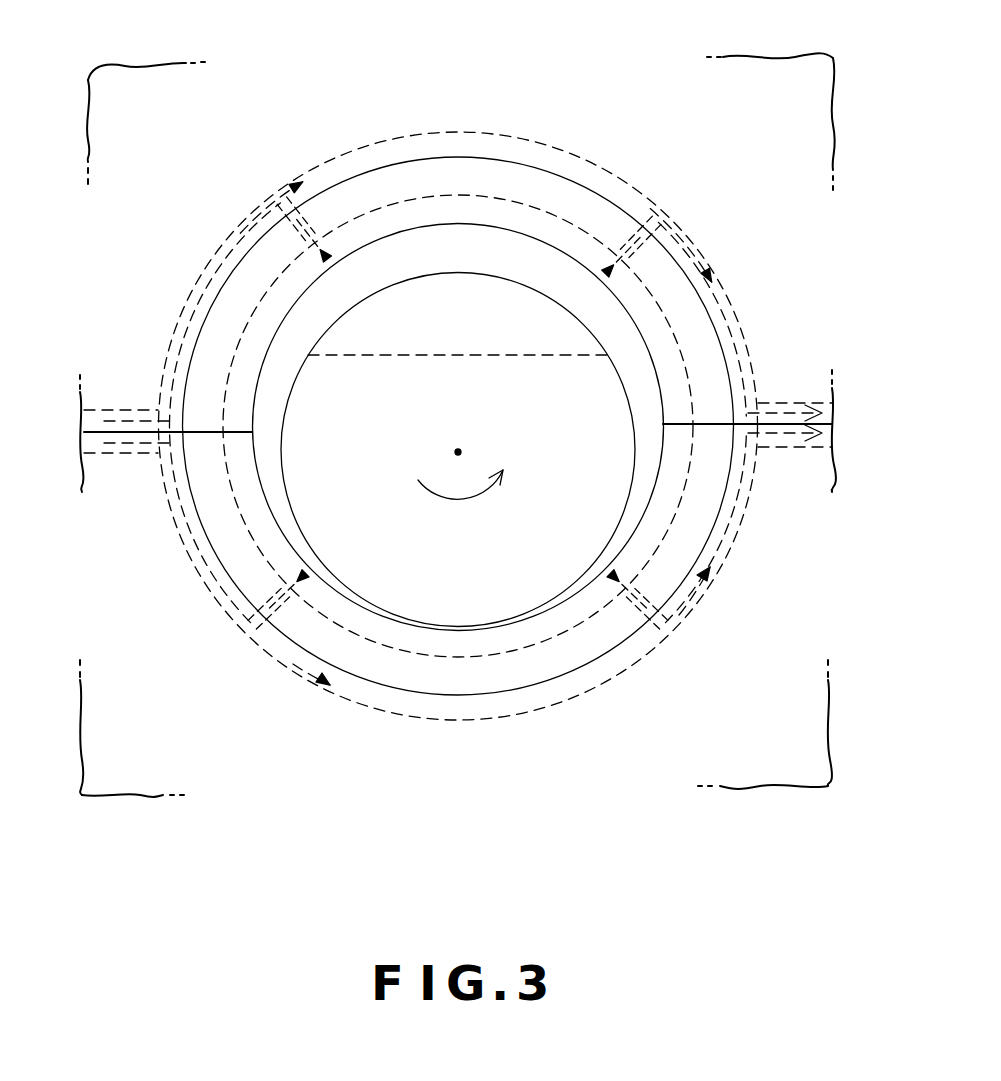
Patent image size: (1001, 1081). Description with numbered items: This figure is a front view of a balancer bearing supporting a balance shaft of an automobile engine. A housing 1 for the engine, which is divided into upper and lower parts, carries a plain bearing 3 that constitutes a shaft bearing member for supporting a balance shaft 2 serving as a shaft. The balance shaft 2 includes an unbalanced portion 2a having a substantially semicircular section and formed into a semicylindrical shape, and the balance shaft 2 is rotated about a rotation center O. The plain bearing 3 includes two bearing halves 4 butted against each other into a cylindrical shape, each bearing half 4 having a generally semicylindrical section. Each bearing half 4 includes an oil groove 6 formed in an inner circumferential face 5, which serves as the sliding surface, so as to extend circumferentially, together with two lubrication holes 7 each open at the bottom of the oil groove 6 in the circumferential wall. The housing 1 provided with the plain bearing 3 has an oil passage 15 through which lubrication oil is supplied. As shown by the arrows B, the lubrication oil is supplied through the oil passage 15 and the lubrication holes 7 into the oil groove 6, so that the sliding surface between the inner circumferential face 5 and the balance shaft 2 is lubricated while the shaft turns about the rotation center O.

The housing 1 is at (110, 98).
The balance shaft 2 is at (640, 320).
The unbalanced portion 2a is at (397, 365).
The plain bearing 3 is at (541, 163).
The bearing half 4 is at (462, 157).
The inner circumferential face 5 is at (568, 253).
The oil groove 6 is at (481, 197).
The lubrication hole 7 is at (296, 301).
The oil passage 15 is at (432, 727).
The arrows B is at (650, 203).
The rotation center O is at (462, 446).